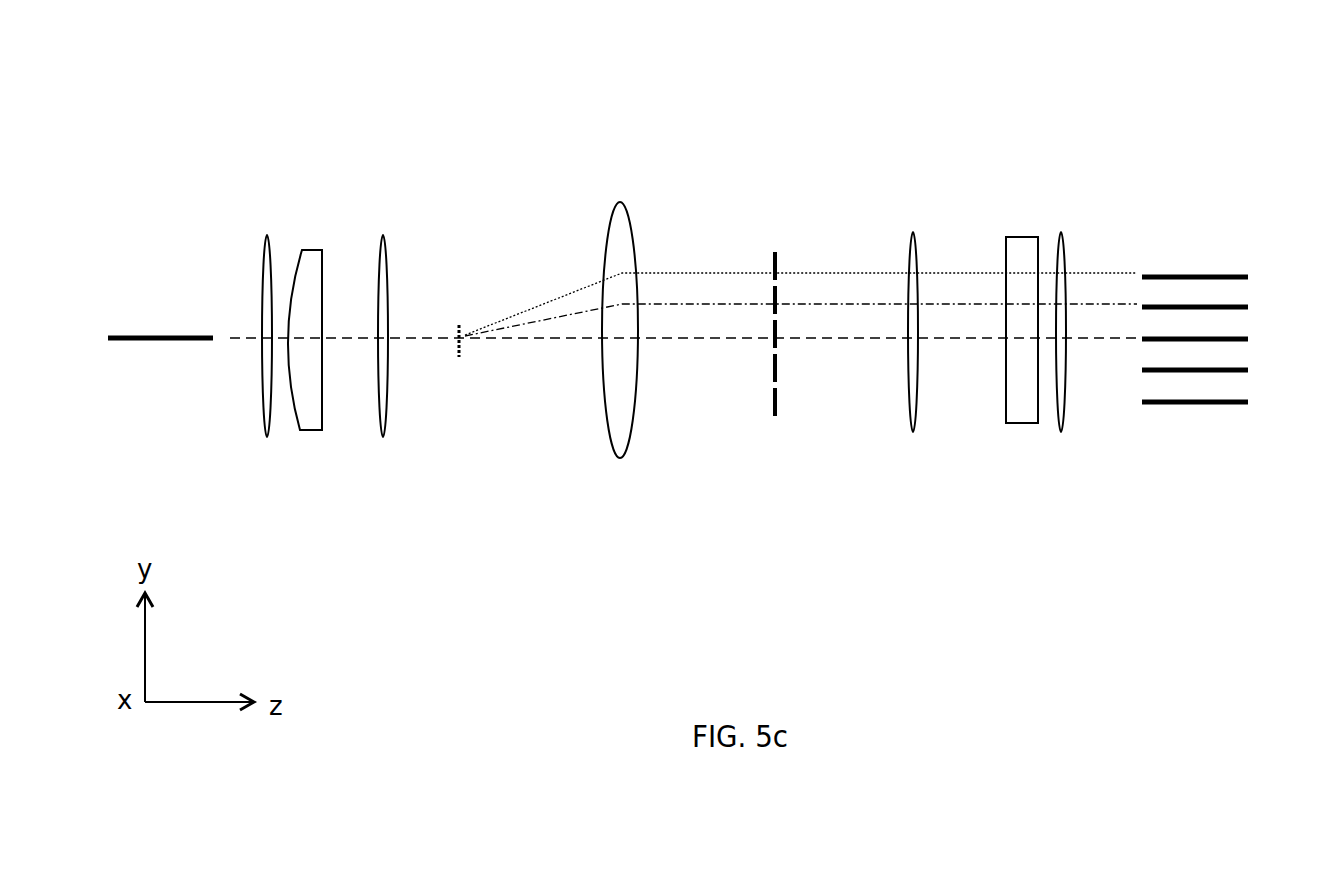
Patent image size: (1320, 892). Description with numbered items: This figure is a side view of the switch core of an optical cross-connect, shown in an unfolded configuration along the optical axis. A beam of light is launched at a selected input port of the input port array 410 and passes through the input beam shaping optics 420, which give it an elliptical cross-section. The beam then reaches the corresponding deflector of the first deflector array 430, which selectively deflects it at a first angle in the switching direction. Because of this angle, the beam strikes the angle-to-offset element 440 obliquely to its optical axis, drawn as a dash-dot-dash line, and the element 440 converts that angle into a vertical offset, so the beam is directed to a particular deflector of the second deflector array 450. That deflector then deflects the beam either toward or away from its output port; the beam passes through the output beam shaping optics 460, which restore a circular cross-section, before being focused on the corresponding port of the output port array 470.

The input port array 410 is at (213, 322).
The input beam shaping optics 420 is at (335, 210).
The first deflector array 430 is at (458, 230).
The angle-to-offset (ATO) element 440 is at (615, 185).
The second deflector array 450 is at (775, 228).
The output beam shaping optics 460 is at (977, 173).
The output port array 470 is at (1140, 260).